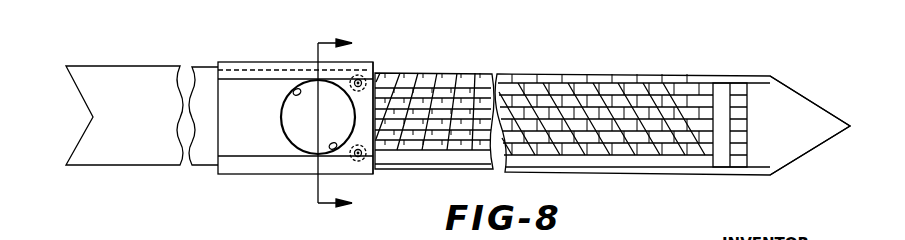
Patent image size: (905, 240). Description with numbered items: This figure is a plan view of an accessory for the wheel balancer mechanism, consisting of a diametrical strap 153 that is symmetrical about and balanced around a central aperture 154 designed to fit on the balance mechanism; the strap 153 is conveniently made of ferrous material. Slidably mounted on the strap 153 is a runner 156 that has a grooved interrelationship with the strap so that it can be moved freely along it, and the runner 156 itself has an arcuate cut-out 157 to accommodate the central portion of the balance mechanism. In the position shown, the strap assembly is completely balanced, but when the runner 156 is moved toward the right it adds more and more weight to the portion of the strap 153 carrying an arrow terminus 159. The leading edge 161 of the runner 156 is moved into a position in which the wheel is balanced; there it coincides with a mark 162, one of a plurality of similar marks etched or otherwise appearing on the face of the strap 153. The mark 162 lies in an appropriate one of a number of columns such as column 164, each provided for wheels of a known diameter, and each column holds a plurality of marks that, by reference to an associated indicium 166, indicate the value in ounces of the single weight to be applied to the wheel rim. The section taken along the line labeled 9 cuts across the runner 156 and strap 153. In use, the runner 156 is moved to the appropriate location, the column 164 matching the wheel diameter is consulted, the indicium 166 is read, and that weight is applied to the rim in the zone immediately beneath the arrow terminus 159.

The diametrical strap 153 is at (555, 73).
The central aperture 154 is at (297, 89).
The runner 156 is at (258, 168).
The arcuate cut-out 157 is at (336, 149).
The arrow terminus 159 is at (823, 110).
The leading edge 161 is at (376, 71).
The mark 162 is at (613, 98).
The column 164 is at (678, 102).
The indicium 166 is at (620, 165).
The section line 9- 9 is at (330, 125).